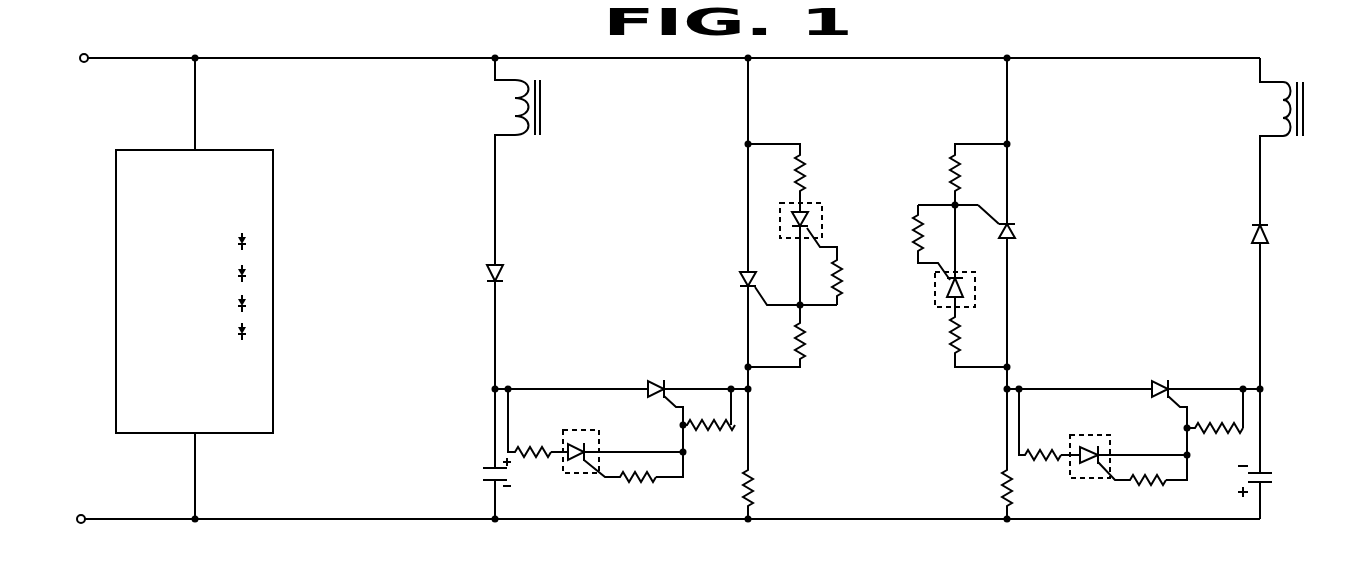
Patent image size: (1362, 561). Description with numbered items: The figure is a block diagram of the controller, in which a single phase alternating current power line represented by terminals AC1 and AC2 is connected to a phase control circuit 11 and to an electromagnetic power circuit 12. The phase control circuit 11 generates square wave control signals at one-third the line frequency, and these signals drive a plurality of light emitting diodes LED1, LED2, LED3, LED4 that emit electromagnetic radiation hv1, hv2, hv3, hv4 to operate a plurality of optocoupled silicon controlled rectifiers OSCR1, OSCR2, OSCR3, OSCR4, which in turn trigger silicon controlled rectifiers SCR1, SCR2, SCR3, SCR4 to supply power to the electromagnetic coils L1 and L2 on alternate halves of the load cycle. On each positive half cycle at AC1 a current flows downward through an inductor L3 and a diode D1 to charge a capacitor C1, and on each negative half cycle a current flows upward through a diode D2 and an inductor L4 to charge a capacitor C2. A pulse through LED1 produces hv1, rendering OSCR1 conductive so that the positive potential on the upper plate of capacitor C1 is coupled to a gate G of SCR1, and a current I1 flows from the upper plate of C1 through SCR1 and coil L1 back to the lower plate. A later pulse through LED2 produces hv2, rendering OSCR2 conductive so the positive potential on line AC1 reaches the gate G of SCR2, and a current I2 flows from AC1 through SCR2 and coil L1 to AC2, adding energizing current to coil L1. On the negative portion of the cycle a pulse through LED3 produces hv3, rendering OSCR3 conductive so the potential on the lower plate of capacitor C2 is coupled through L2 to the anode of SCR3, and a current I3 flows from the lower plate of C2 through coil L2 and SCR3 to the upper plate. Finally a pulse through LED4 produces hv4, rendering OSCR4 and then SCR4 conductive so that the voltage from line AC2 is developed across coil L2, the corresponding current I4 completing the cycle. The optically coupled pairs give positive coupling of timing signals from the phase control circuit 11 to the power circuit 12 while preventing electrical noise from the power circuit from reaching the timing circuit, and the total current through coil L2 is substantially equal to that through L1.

The power line terminal AC1 is at (164, 55).
The power line terminal AC2 is at (163, 522).
The phase control circuit 11 is at (255, 152).
The light emitting diode LED1 is at (208, 242).
The light emitting diode LED2 is at (208, 274).
The light emitting diode LED3 is at (208, 304).
The light emitting diode LED4 is at (208, 332).
The electromagnetic radiation hv1 is at (258, 245).
The electromagnetic radiation hv2 is at (258, 277).
The electromagnetic radiation hv3 is at (258, 307).
The electromagnetic radiation hv4 is at (258, 335).
The inductor L3 is at (512, 110).
The diode D1 is at (485, 276).
The capacitor C1 is at (483, 471).
The silicon controlled rectifier SCR1 is at (665, 380).
The optically coupled silicon controlled rectifier OSCR1 is at (590, 478).
The electromagnetic coil L1 is at (755, 487).
The current I1 is at (502, 369).
The electromagnetic power circuit 12 is at (452, 417).
The current I2 is at (736, 80).
The silicon controlled rectifier SCR2 is at (742, 283).
The optically coupled silicon controlled rectifier OSCR2 is at (780, 222).
The silicon controlled rectifier SCR4 is at (1017, 233).
The optically coupled silicon controlled rectifier OSCR4 is at (934, 279).
The inductor L4 is at (1282, 111).
The diode D2 is at (1250, 237).
The capacitor C2 is at (1270, 482).
The silicon controlled rectifier SCR3 is at (1168, 382).
The optically coupled silicon controlled rectifier OSCR3 is at (1105, 480).
The electromagnetic coil L2 is at (1003, 480).
The current I4 is at (989, 524).
The current I3 is at (1275, 535).
The gate G is at (672, 410).